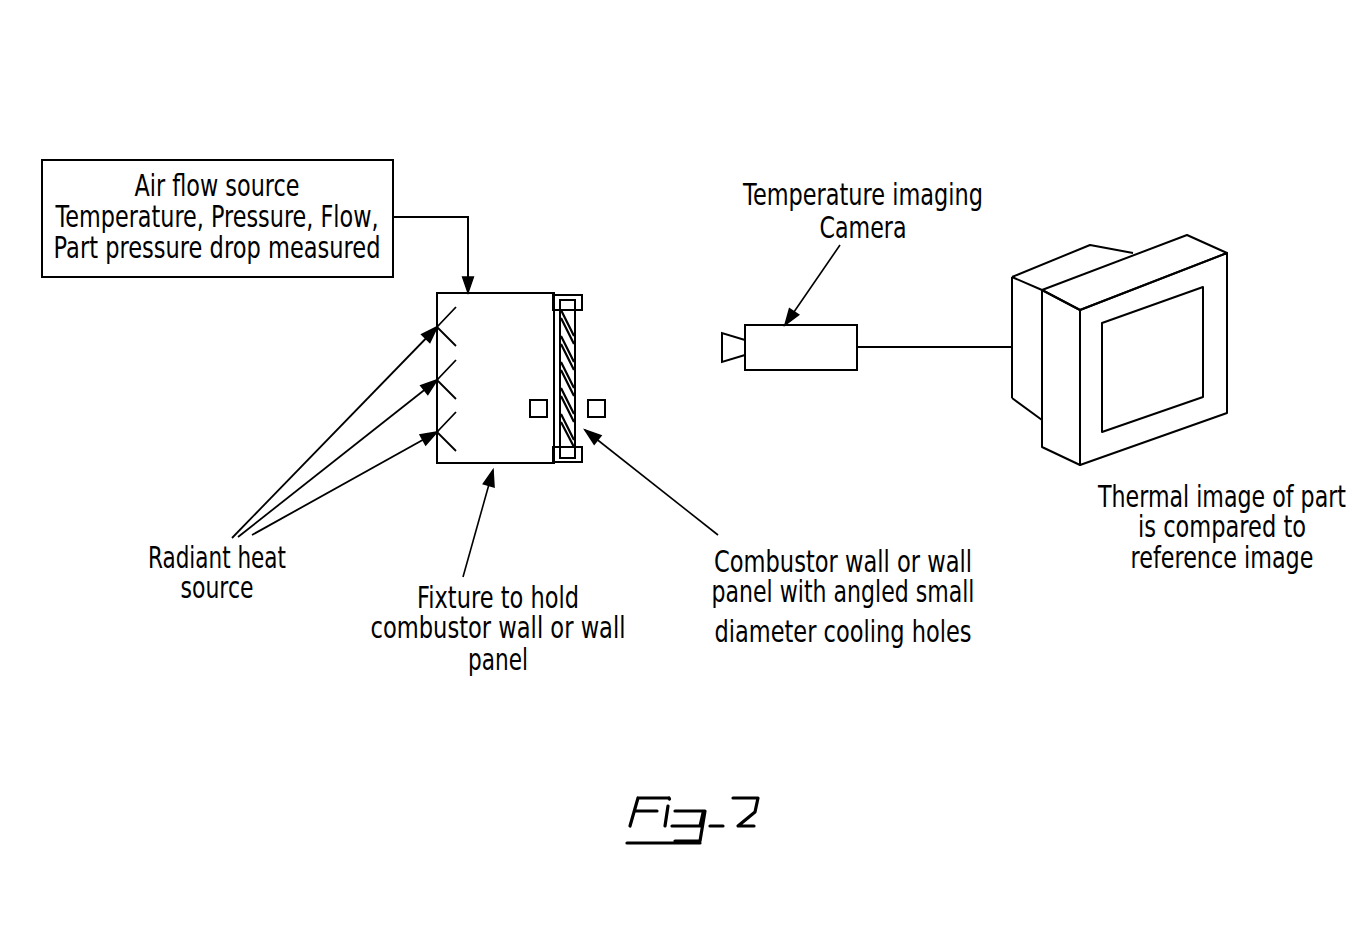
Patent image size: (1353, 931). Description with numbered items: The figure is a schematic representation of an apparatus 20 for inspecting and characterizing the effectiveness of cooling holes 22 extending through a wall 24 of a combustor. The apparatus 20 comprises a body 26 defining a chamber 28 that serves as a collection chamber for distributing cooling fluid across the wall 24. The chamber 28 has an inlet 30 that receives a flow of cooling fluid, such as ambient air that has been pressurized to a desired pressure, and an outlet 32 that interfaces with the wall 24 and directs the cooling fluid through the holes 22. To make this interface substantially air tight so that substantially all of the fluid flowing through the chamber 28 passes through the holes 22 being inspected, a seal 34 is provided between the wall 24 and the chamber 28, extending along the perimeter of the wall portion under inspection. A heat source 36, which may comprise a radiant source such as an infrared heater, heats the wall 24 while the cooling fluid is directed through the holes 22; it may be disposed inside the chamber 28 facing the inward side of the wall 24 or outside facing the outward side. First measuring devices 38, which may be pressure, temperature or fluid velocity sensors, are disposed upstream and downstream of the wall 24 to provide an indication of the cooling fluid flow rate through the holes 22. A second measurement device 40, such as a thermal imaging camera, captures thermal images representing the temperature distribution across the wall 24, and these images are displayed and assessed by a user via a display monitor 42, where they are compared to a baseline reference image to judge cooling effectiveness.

The apparatus 20 is at (406, 103).
The holes 22 is at (575, 336).
The wall 24 is at (575, 360).
The body 26 is at (506, 293).
The chamber 28 is at (512, 391).
The inlet 30 is at (467, 292).
The outlet 32 is at (603, 321).
The seal 34 is at (568, 298).
The heat source 36 is at (430, 432).
The first measuring device 38 is at (603, 418).
The second measurement device 40 is at (780, 370).
The display monitor 42 is at (1232, 277).